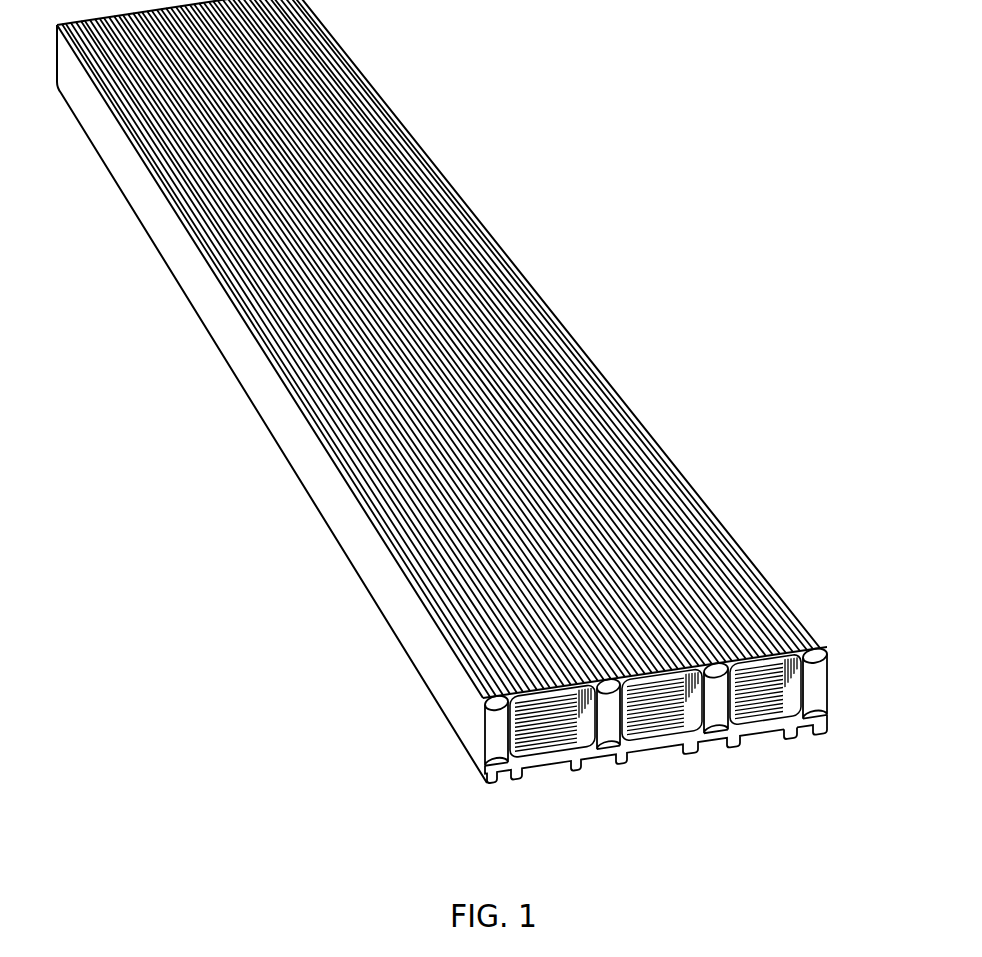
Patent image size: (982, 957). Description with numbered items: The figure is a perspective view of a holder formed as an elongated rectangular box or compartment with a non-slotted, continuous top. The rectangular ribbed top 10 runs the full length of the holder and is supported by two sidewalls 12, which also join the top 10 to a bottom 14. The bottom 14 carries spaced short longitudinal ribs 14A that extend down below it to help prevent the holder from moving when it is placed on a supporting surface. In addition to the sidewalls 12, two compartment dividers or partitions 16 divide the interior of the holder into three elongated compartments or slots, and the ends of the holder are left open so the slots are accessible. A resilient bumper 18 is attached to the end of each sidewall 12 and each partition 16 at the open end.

The ribbed top 10 is at (570, 433).
The sidewall 12 is at (367, 560).
The bottom 14 is at (542, 760).
The longitudinal rib 14A is at (795, 733).
The partition 16 is at (595, 720).
The resilient bumper 18 is at (815, 690).